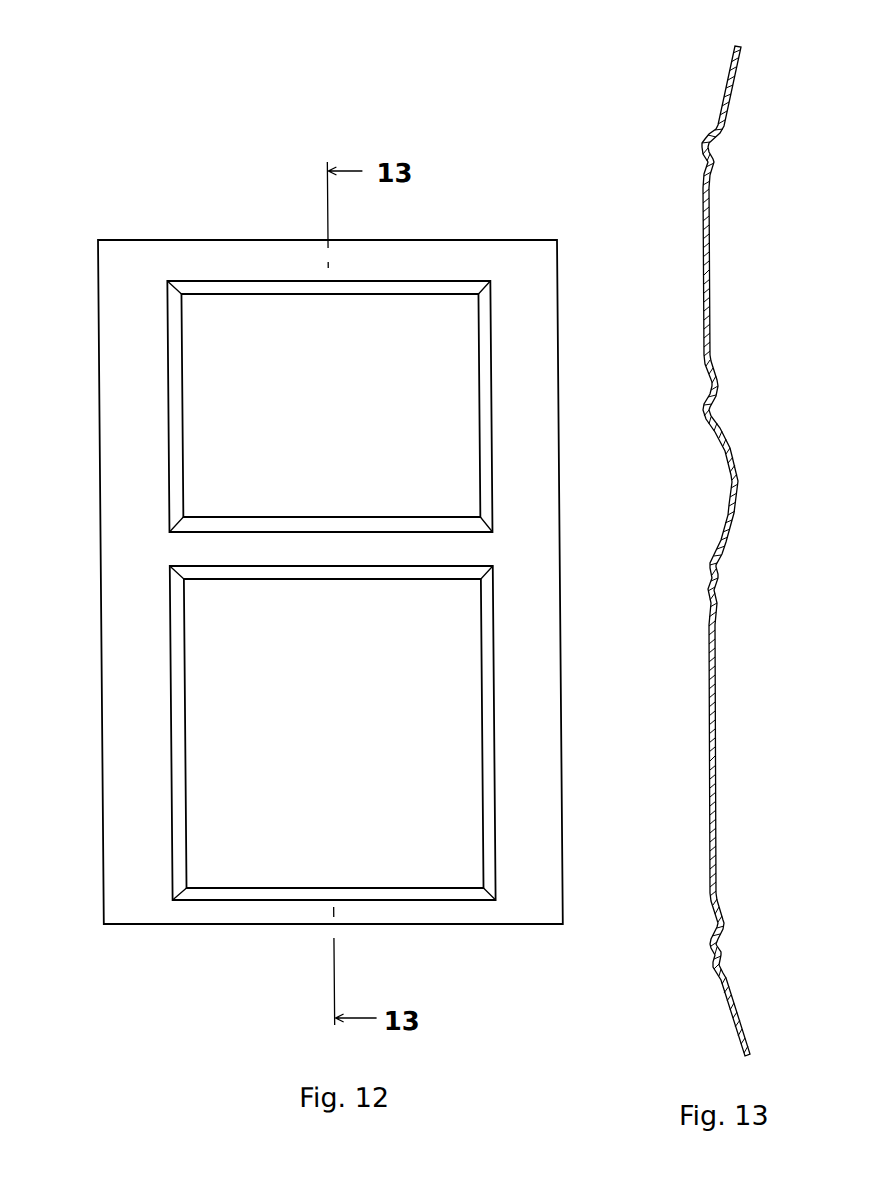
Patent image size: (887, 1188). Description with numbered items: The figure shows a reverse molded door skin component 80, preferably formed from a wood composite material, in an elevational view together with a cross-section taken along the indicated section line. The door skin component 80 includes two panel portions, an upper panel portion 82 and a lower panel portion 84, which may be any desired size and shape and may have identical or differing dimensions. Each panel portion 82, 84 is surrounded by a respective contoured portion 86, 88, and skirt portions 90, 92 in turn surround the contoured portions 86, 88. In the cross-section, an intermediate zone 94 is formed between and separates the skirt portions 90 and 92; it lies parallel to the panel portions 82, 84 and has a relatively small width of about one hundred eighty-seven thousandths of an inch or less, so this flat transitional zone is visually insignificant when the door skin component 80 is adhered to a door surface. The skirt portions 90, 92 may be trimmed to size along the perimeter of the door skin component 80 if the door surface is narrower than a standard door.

In FIG. 12, the door skin component 80 is at (482, 187).
In FIG. 12, the panel portion 82 is at (447, 367).
In FIG. 13, the panel portion 82 is at (702, 242).
In FIG. 12, the panel portion 84 is at (413, 697).
In FIG. 13, the panel portion 84 is at (708, 733).
In FIG. 12, the contoured portion 86 is at (492, 299).
In FIG. 13, the contoured portion 86 is at (700, 145).
In FIG. 12, the contoured portion 88 is at (482, 775).
In FIG. 13, the contoured portion 88 is at (713, 597).
In FIG. 12, the skirt portion 90 is at (125, 342).
In FIG. 13, the skirt portion 90 is at (728, 70).
In FIG. 12, the skirt portion 92 is at (143, 719).
In FIG. 13, the skirt portion 92 is at (722, 537).
In FIG. 13, the intermediate zone 94 is at (738, 488).